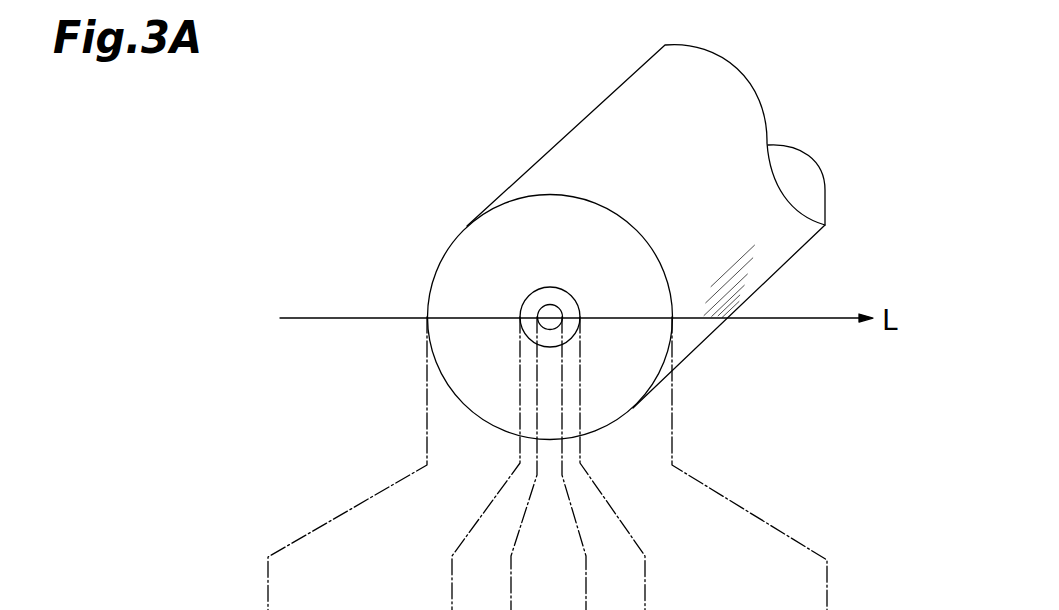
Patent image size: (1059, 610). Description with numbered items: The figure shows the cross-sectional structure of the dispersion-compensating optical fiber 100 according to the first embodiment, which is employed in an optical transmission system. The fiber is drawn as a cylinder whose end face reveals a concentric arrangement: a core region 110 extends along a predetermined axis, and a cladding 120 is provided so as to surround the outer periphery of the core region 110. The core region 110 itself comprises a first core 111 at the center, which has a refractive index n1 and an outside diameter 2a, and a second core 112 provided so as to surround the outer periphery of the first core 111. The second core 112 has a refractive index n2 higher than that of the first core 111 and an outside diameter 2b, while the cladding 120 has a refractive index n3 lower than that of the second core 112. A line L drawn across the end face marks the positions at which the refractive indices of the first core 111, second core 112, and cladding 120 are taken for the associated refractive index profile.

The dispersion-compensating optical fiber 100 is at (730, 98).
The core region 110 is at (466, 396).
The first core 111 is at (547, 308).
The second core 112 is at (547, 298).
The cladding 120 is at (463, 369).
The outside diameter of first core 2a is at (569, 517).
The outside diameter of second core 2b is at (643, 556).